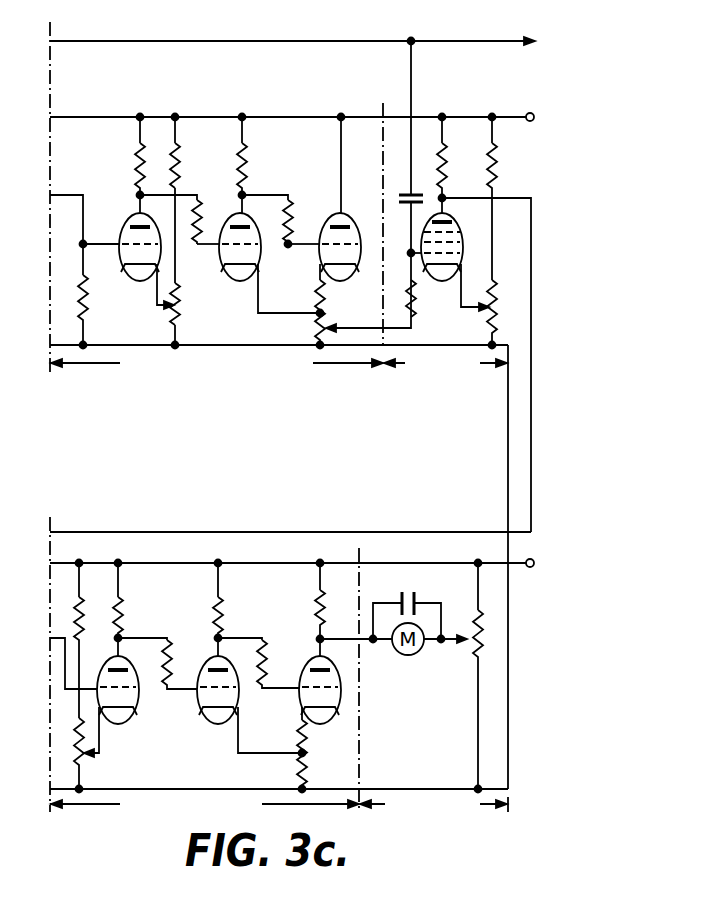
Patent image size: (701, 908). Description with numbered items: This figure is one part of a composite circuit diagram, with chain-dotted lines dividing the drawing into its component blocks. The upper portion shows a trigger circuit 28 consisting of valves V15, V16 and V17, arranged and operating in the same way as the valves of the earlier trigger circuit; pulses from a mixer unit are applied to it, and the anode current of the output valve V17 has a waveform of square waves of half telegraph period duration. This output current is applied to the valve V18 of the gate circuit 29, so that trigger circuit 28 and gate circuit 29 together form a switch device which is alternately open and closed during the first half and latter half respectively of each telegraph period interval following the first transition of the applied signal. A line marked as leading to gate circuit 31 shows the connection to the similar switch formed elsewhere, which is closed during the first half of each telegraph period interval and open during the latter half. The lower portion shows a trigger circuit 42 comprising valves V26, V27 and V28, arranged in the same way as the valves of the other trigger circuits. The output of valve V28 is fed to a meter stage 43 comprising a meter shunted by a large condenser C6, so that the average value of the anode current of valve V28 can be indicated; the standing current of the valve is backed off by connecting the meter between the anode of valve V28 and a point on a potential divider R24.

The valve V15 is at (121, 234).
The valve V16 is at (230, 215).
The output valve V17 is at (331, 218).
The valve V18 is at (447, 217).
The valve V26 is at (137, 709).
The valve V27 is at (241, 707).
The valve V28 is at (324, 714).
The condenser C6 is at (410, 591).
The potential divider R24 is at (472, 648).
The trigger circuit 28 is at (216, 365).
The gate circuit 29 is at (445, 375).
The gate circuit 31 is at (325, 28).
The trigger circuit 42 is at (204, 806).
The meter stage 43 is at (434, 806).